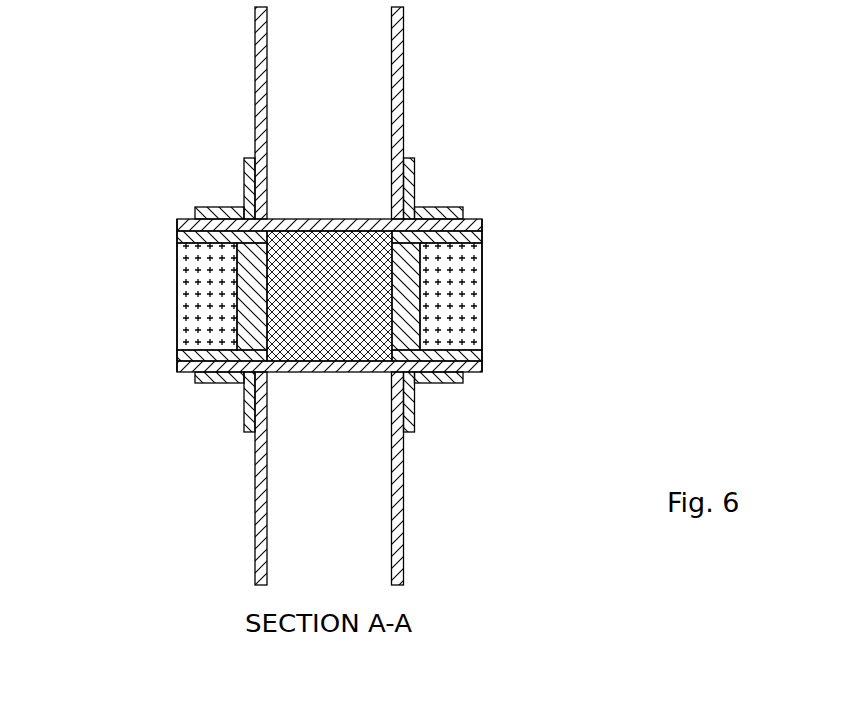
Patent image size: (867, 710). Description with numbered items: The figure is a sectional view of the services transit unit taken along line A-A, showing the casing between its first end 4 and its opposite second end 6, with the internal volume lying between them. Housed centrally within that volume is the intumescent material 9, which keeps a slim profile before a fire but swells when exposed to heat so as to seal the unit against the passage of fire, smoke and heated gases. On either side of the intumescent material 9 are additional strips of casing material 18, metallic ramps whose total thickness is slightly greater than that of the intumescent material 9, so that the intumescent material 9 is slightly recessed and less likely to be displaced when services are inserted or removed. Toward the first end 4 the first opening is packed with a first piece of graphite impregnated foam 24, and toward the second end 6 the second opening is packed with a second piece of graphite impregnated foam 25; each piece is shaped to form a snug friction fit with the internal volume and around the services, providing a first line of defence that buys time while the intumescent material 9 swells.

The first end 4 is at (134, 295).
The second end 6 is at (522, 295).
The intumescent material 9 is at (327, 338).
The additional strips of casing material 18 is at (570, 357).
The first piece of graphite impregnated foam 24 is at (149, 292).
The second piece of graphite impregnated foam 25 is at (493, 296).